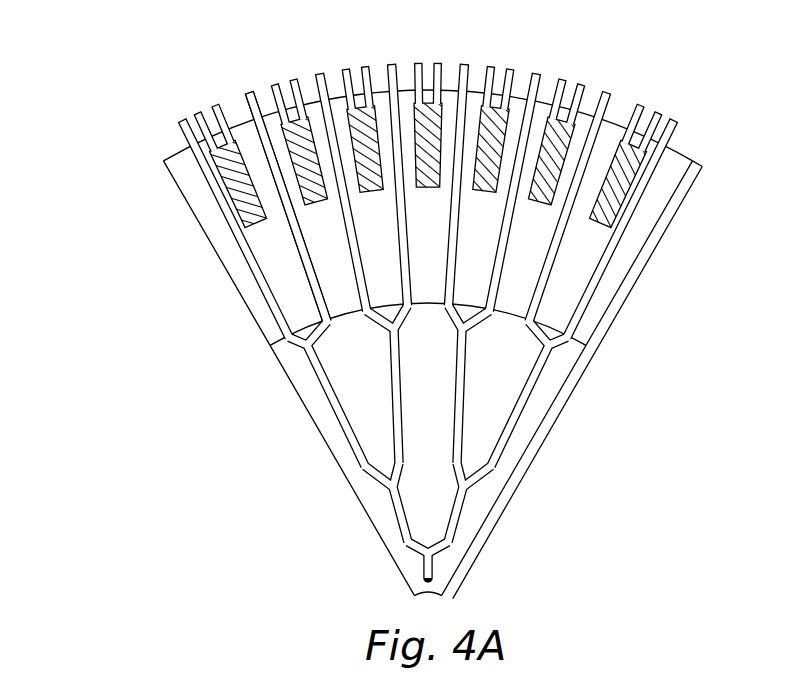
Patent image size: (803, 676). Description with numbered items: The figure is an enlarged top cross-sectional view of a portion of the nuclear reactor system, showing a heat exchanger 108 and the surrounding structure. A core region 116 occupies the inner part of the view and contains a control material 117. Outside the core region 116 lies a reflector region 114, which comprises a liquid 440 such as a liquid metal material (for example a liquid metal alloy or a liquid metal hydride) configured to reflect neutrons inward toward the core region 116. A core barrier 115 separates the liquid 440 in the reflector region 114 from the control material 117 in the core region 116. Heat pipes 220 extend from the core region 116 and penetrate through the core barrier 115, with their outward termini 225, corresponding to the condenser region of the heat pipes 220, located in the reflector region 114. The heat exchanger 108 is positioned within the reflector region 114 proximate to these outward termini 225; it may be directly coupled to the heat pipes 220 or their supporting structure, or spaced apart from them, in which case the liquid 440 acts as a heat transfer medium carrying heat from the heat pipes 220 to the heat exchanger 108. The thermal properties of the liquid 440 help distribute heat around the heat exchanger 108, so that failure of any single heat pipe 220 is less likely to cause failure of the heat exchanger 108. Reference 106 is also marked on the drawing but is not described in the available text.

The electrode assembly 106 is at (124, 80).
The heat exchanger 108 is at (651, 108).
The reflector region 114 is at (638, 268).
The core barrier 115 is at (283, 347).
The core region 116 is at (509, 488).
The control material 117 is at (328, 418).
The heat pipes 220 is at (267, 307).
The outward termini 225 is at (318, 73).
The liquid 440 is at (227, 252).